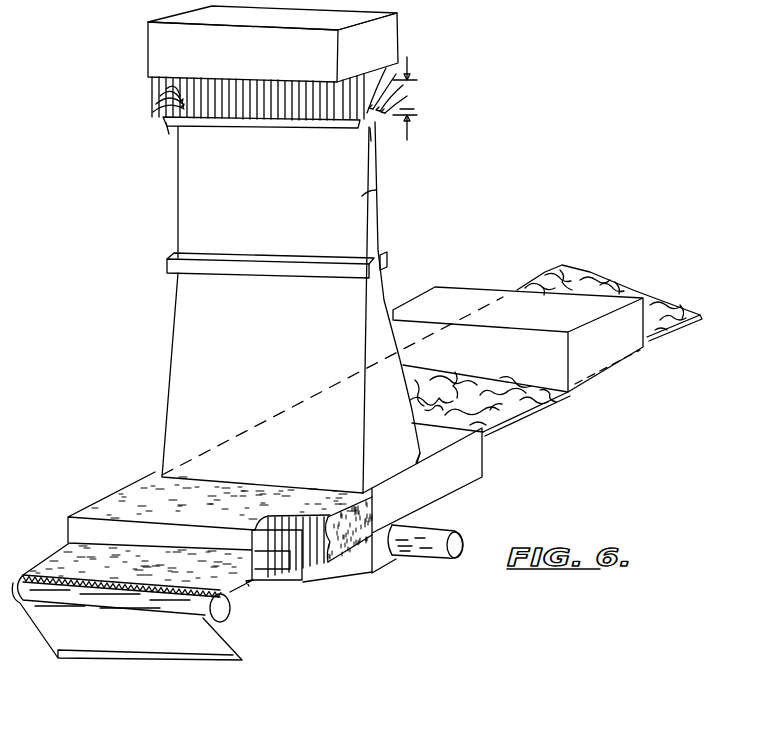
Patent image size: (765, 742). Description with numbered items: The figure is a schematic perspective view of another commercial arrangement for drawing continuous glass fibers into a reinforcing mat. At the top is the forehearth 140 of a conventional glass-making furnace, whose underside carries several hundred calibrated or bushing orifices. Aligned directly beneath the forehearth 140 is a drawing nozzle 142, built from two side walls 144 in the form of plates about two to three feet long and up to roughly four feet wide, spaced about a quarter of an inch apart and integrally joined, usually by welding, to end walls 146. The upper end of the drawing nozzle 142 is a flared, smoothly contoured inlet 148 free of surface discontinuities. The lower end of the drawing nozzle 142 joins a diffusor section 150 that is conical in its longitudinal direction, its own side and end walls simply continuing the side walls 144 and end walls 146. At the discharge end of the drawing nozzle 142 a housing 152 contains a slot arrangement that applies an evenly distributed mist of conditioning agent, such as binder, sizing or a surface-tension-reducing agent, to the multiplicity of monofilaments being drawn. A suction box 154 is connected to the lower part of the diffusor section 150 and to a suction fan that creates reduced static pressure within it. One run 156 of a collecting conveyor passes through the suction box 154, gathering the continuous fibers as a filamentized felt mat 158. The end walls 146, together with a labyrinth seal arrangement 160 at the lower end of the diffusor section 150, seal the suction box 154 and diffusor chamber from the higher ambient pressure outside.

The forehearth 140 is at (265, 57).
The drawing nozzle 142 is at (385, 204).
The side walls 144 is at (376, 190).
The end walls 146 is at (178, 190).
The inlet 148 is at (319, 118).
The diffusor section 150 is at (272, 383).
The housing 152 is at (318, 272).
The suction box 154 is at (433, 532).
The run of collecting conveyor 156 is at (83, 542).
The filamentized felt mat 158 is at (490, 412).
The labyrinth seal arrangement 160 is at (288, 507).